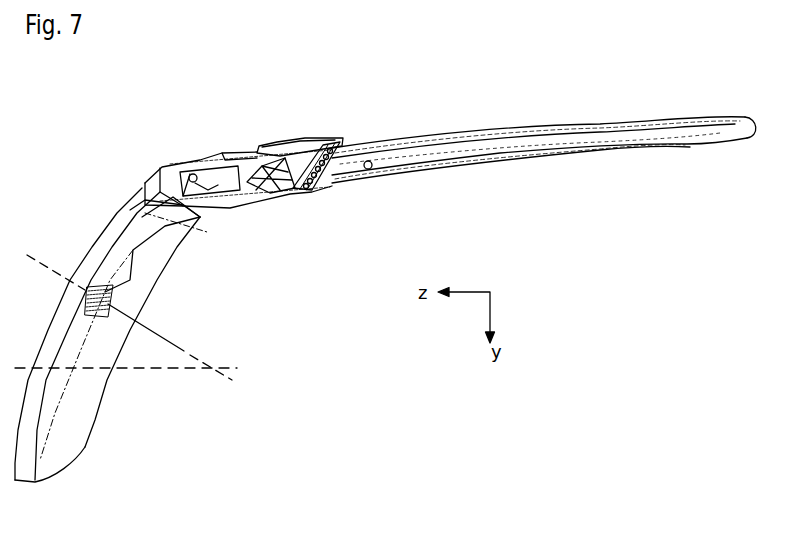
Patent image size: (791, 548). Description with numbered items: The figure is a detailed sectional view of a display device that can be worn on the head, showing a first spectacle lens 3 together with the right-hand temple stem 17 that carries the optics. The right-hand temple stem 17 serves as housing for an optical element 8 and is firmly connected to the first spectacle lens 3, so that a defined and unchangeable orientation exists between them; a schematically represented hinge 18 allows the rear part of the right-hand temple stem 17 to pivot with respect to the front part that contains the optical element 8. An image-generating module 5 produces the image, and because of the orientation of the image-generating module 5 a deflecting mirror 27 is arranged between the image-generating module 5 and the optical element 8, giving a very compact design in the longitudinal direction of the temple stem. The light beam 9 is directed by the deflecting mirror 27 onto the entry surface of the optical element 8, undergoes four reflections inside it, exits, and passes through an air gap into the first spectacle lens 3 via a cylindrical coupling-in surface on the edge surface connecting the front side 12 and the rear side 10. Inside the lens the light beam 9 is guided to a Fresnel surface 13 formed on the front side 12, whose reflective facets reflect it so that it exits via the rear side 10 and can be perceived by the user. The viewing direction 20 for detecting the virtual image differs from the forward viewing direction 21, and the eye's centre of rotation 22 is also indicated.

The first spectacle lens 3 is at (101, 247).
The image-generating module 5 is at (305, 195).
The optical element 8 is at (240, 162).
The light beam 9 is at (240, 195).
The rear side 10 is at (93, 427).
The front side 12 is at (125, 210).
The Fresnel surface 13 is at (93, 290).
The right-hand temple stem 17 is at (598, 130).
The hinge 18 is at (367, 169).
The viewing direction 20 is at (187, 350).
The forward viewing direction 21 is at (146, 372).
The eye's centre of rotation 22 is at (212, 372).
The deflecting mirror 27 is at (292, 143).